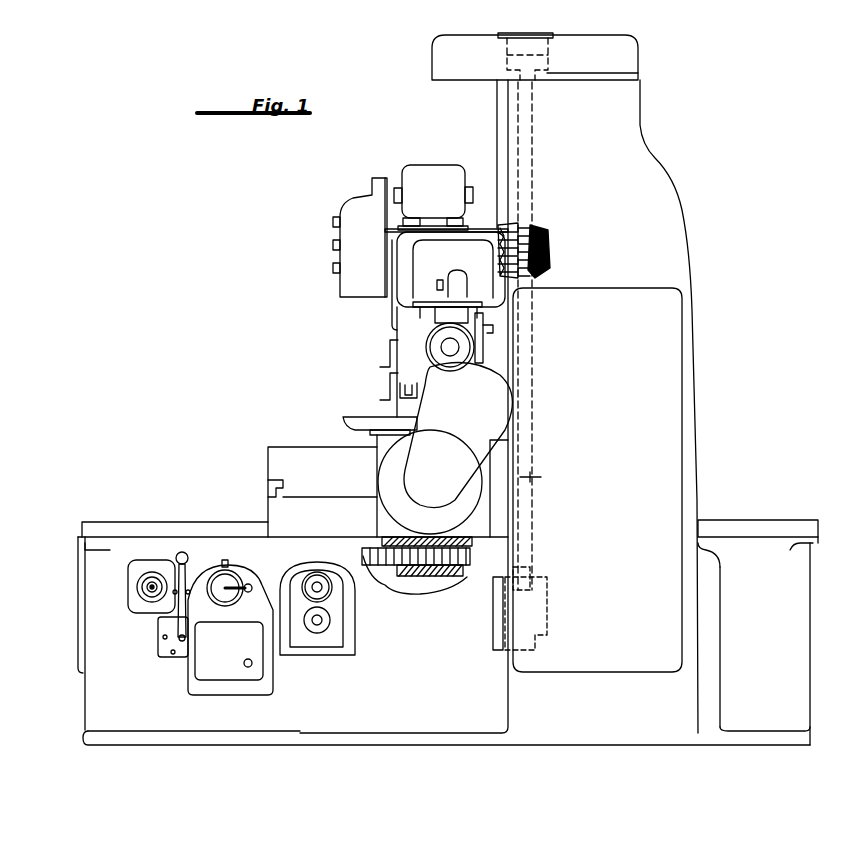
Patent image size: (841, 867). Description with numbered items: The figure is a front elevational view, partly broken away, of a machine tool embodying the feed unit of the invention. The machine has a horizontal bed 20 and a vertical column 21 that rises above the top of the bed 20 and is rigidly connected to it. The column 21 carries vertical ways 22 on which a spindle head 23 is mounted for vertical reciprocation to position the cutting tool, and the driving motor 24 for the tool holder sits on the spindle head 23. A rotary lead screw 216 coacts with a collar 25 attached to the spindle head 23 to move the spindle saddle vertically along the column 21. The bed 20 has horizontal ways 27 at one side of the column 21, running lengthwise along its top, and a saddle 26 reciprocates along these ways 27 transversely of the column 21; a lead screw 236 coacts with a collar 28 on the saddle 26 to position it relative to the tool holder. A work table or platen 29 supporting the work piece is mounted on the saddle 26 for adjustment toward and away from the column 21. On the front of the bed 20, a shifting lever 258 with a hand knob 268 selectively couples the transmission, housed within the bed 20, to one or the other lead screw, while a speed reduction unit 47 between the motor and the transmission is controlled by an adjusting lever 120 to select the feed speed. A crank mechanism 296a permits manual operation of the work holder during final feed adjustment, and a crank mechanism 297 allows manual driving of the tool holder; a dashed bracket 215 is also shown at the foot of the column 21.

The horizontal bed 20 is at (100, 688).
The vertical column 21 is at (680, 239).
The vertical ways 22 is at (497, 110).
The spindle head 23 is at (410, 318).
The driving motor 24 is at (458, 505).
The collar 25 is at (533, 233).
The rotary lead screw 216 is at (549, 250).
The saddle 26 is at (280, 522).
The horizontal ways 27 is at (230, 522).
The collar 28 is at (447, 578).
The lead screw 236 is at (455, 566).
The work table or platen 29 is at (315, 458).
The adjusting lever 120 is at (242, 583).
The shifting lever 258 is at (184, 580).
The hand knob 268 is at (179, 553).
The crank mechanism 296a is at (148, 590).
The crank mechanism 297 is at (319, 585).
The speed reduction unit 47 is at (283, 678).
The lower bracket 215 is at (536, 613).